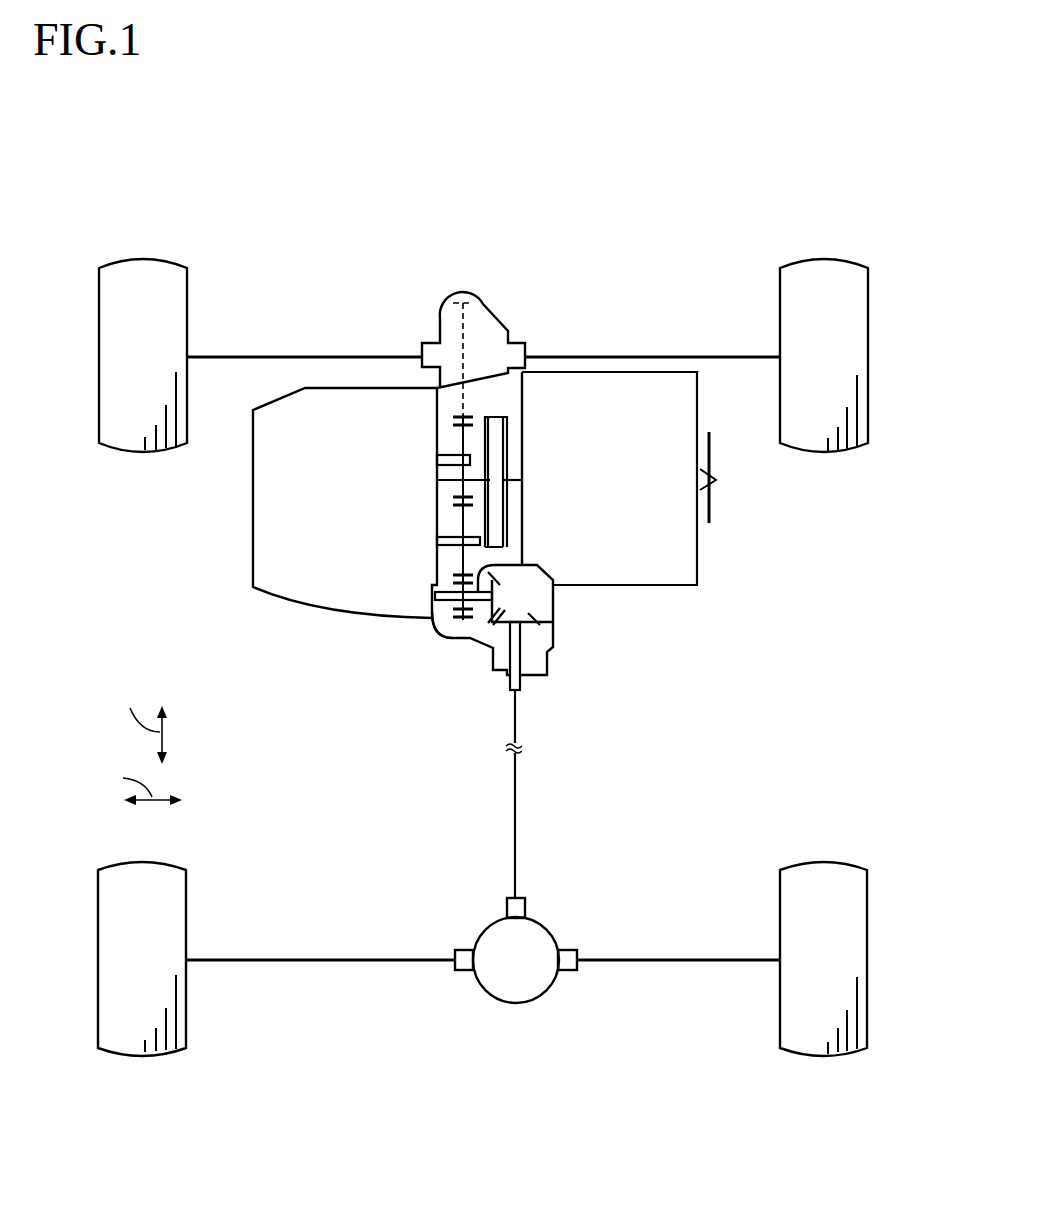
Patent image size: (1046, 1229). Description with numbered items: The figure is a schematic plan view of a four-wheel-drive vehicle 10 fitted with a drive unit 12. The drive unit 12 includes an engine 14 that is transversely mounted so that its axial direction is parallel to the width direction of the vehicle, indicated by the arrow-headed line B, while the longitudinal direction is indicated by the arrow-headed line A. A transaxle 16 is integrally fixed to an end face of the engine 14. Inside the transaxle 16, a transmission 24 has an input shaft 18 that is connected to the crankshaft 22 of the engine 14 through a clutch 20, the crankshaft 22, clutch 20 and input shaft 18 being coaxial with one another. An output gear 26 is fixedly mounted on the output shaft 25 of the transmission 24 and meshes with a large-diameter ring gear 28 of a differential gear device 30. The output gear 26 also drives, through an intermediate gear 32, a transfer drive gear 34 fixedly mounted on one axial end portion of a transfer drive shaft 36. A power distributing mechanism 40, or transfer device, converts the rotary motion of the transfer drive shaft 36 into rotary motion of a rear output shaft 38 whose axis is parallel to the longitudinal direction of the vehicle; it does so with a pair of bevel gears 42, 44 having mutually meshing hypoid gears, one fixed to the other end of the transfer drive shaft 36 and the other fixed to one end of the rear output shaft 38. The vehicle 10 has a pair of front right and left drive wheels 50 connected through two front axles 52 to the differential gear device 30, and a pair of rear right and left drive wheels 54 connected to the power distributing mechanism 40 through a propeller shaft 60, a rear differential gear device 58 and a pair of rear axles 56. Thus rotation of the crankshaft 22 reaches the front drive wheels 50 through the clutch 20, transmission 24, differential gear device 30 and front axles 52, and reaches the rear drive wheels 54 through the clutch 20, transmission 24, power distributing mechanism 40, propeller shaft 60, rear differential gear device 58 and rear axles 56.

The four-wheel-drive vehicle 10 is at (688, 178).
The drive unit 12 is at (652, 280).
The engine 14 is at (685, 566).
The transaxle 16 is at (362, 618).
The input shaft 18 is at (447, 483).
The clutch 20 is at (503, 432).
The crankshaft 22 is at (513, 480).
The transmission 24 is at (253, 542).
The output shaft 25 is at (445, 461).
The output gear 26 is at (452, 430).
The ring gear 28 is at (470, 320).
The differential gear device 30 is at (423, 314).
The intermediate gear 32 is at (457, 578).
The transfer drive gear 34 is at (447, 601).
The transfer drive shaft 36 is at (445, 601).
The rear output shaft 38 is at (521, 665).
The power distributing mechanism 40 is at (537, 597).
The bevel gear 42 is at (500, 583).
The bevel gear 44 is at (541, 620).
The front drive wheels 50 is at (160, 270).
The front axles 52 is at (240, 356).
The rear drive wheels 54 is at (173, 877).
The rear axles 56 is at (335, 961).
The rear differential gear device 58 is at (524, 998).
The propeller shaft 60 is at (516, 827).